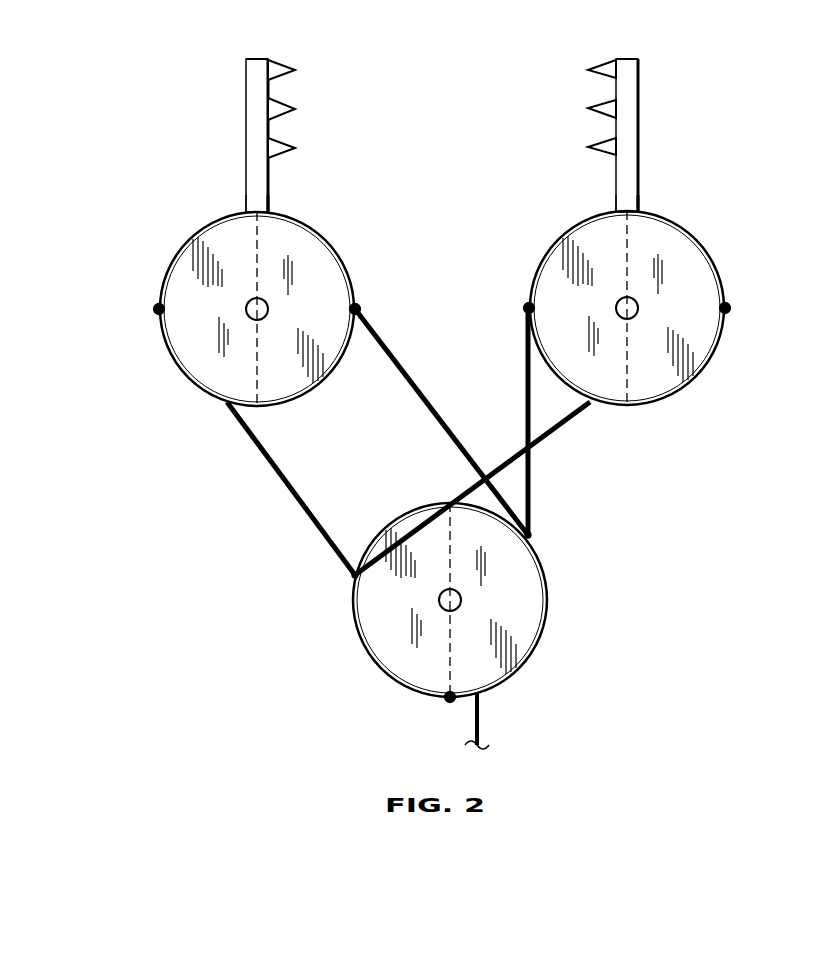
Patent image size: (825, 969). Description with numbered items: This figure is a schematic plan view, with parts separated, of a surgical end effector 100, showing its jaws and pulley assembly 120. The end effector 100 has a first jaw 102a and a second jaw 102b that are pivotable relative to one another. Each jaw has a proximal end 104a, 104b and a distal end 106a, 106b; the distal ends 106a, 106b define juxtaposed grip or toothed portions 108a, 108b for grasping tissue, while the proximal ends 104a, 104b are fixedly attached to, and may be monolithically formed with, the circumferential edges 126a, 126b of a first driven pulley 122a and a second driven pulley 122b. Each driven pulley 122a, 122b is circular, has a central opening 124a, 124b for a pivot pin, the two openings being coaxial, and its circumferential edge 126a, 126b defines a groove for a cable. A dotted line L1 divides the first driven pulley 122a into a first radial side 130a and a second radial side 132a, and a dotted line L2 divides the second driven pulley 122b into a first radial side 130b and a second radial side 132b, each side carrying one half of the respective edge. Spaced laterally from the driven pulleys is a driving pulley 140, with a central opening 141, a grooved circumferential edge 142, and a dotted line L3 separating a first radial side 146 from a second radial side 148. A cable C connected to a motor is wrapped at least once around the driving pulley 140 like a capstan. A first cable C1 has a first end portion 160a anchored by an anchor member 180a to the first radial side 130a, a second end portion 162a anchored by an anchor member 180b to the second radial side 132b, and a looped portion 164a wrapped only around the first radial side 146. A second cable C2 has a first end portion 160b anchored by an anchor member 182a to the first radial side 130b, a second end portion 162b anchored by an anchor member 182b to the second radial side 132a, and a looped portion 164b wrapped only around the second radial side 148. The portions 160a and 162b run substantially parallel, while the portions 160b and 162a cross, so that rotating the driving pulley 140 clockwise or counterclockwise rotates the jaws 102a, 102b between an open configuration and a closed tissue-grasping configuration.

The end effector 100 is at (98, 110).
The first jaw 102a is at (250, 72).
The second jaw 102b is at (626, 78).
The proximal end of first jaw 104a is at (246, 200).
The proximal end of second jaw 104b is at (630, 202).
The distal end of first jaw 106a is at (262, 58).
The distal end of second jaw 106b is at (628, 58).
The toothed portion of first jaw 108a is at (285, 100).
The toothed portion of second jaw 108b is at (600, 105).
The pulley assembly 120 is at (428, 240).
The first driven pulley 122a is at (193, 402).
The second driven pulley 122b is at (705, 390).
The central opening of first driven pulley 124a is at (252, 298).
The central opening of second driven pulley 124b is at (638, 300).
The circumferential edge of first driven pulley 126a is at (175, 255).
The circumferential edge of second driven pulley 126b is at (720, 347).
The first radial side of first driven pulley 130a is at (193, 318).
The first radial side of second driven pulley 130b is at (553, 267).
The second radial side of first driven pulley 132a is at (322, 272).
The second radial side of second driven pulley 132b is at (700, 325).
The driving pulley 140 is at (540, 668).
The central opening of driving pulley 141 is at (445, 611).
The circumferential edge of driving pulley 142 is at (386, 676).
The first radial side of driving pulley 146 is at (378, 618).
The second radial side of driving pulley 148 is at (523, 622).
The first end portion of first cable 160a is at (235, 417).
The first end portion of second cable 160b is at (526, 336).
The second end portion of first cable 162a is at (583, 408).
The second end portion of second cable 162b is at (382, 340).
The looped portion of first cable 164a is at (352, 575).
The looped portion of second cable 164b is at (535, 533).
The anchor member 180a is at (155, 305).
The anchor member 180b is at (730, 308).
The anchor member 182a is at (526, 306).
The anchor member 182b is at (358, 309).
The dotted line L1 is at (258, 377).
The dotted line L2 is at (628, 377).
The dotted line L3 is at (450, 559).
The first cable C1 is at (323, 533).
The second cable C2 is at (528, 435).
The cable C is at (478, 715).